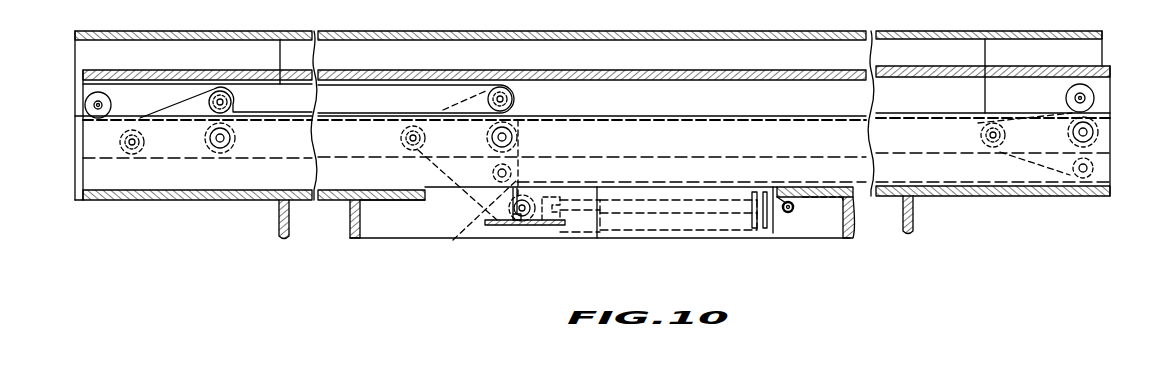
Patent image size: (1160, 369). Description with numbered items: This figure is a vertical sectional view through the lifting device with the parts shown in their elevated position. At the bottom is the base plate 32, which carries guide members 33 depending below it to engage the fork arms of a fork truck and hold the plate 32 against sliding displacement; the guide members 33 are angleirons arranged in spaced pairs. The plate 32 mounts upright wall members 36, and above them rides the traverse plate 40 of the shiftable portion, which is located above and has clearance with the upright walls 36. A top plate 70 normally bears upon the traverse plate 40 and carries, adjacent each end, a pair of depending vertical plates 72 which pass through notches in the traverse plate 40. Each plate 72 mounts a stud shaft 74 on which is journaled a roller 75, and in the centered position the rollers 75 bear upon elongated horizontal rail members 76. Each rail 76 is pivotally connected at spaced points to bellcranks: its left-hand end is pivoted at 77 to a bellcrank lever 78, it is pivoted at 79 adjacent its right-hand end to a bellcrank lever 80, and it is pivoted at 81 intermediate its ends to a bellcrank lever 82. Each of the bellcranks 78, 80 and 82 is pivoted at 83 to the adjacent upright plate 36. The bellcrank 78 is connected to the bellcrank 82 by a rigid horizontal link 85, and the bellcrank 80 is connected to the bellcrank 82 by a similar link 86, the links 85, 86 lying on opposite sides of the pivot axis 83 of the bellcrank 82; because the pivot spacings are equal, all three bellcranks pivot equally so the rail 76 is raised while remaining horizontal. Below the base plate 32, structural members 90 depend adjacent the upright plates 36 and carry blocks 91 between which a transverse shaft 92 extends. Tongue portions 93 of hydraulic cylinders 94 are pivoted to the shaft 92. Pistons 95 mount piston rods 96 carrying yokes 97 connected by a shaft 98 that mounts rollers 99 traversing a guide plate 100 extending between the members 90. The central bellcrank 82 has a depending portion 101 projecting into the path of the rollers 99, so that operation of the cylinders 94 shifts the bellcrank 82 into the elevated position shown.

The top plate 70 is at (538, 32).
The vertical plates 72 is at (82, 52).
The traverse plate 40 is at (638, 72).
The upright wall members 36 is at (742, 132).
The plate 32 is at (187, 201).
The guide members 33 is at (290, 227).
The stud shaft 74 is at (103, 105).
The roller 75 is at (88, 107).
The rail members 76 is at (82, 152).
The pivot 77 is at (130, 157).
The bellcrank lever 78 is at (182, 112).
The pivot 79 is at (983, 137).
The bellcrank lever 80 is at (1057, 163).
The pivot 81 is at (401, 137).
The bellcrank lever 82 is at (513, 110).
The pivot 83 is at (224, 138).
The link 85 is at (343, 100).
The link 86 is at (978, 170).
The structural members 90 is at (422, 230).
The blocks 91 is at (827, 217).
The transverse shaft 92 is at (790, 217).
The tongue portions 93 is at (790, 213).
The cylinders 94 is at (693, 227).
The pistons 95 is at (753, 228).
The piston rods 96 is at (727, 207).
The yokes 97 is at (563, 233).
The shaft 98 is at (497, 217).
The rollers 99 is at (536, 221).
The guide plate 100 is at (508, 230).
The depending portion 101 is at (495, 200).